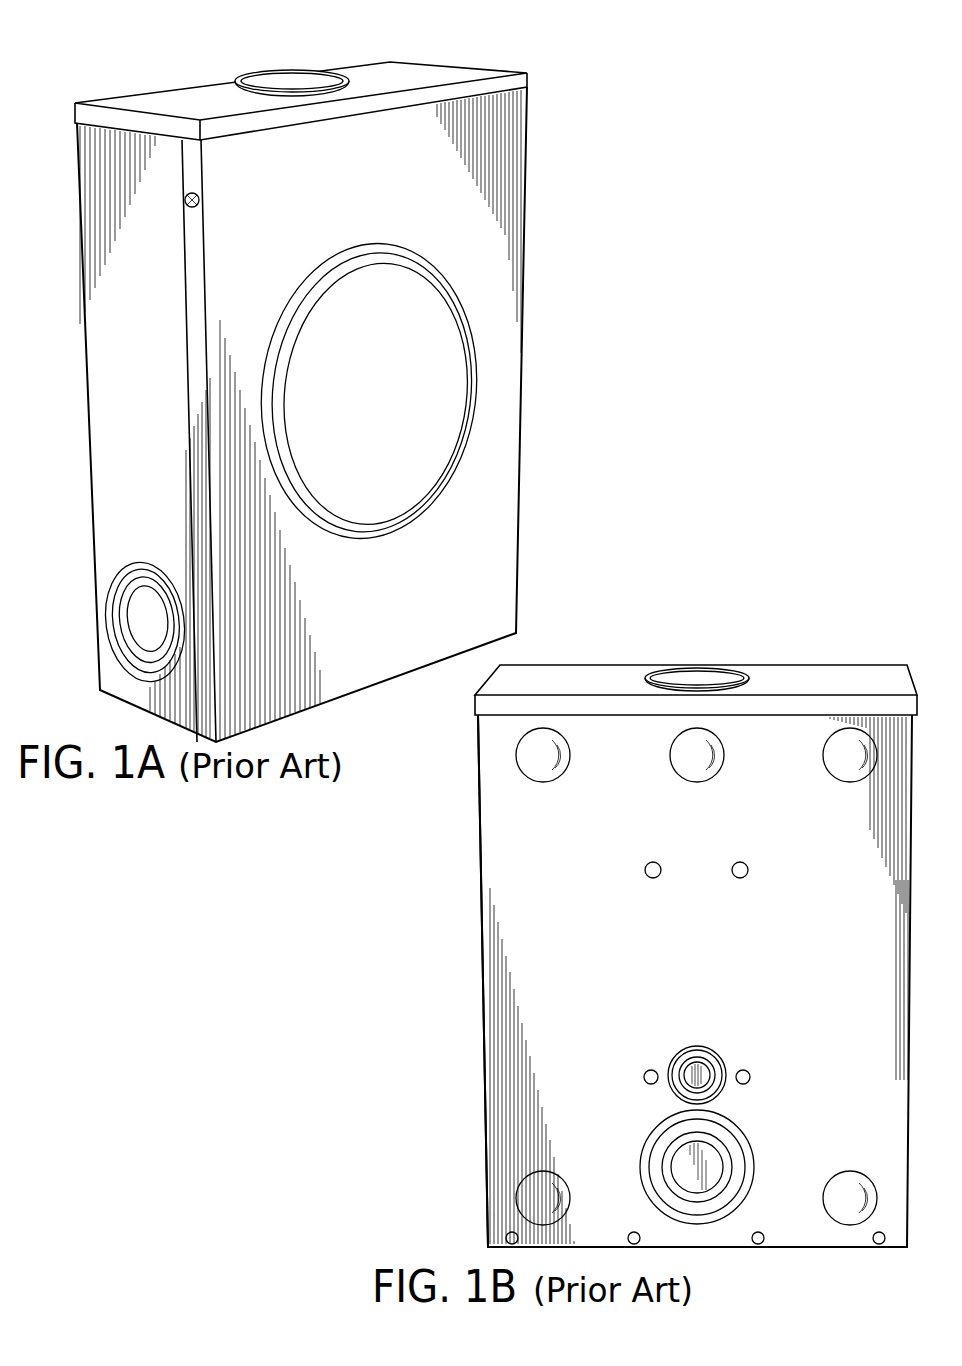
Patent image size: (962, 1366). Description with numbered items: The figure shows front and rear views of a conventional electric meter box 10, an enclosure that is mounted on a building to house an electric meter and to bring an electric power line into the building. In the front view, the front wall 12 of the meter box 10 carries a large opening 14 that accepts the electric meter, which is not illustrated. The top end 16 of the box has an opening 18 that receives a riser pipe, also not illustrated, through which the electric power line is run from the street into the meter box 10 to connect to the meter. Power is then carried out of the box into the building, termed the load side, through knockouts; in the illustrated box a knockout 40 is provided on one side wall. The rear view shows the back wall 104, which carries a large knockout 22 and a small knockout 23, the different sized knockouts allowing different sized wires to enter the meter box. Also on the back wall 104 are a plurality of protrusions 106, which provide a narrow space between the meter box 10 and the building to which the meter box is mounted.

In FIG. 1A, the electric meter box 10 is at (483, 65).
In FIG. 1B, the electric meter box 10 is at (557, 678).
In FIG. 1A, the front wall 12 is at (498, 212).
In FIG. 1A, the large opening 14 is at (467, 383).
In FIG. 1A, the top end 16 is at (382, 82).
In FIG. 1B, the top end 16 is at (800, 677).
In FIG. 1A, the opening 18 is at (277, 78).
In FIG. 1B, the opening 18 is at (697, 670).
In FIG. 1A, the knockout 40 is at (128, 628).
In FIG. 1B, the back wall 104 is at (512, 950).
In FIG. 1B, the protrusions 106 is at (860, 748).
In FIG. 1B, the large knockout 22 is at (710, 1198).
In FIG. 1B, the small knockout 23 is at (680, 1063).